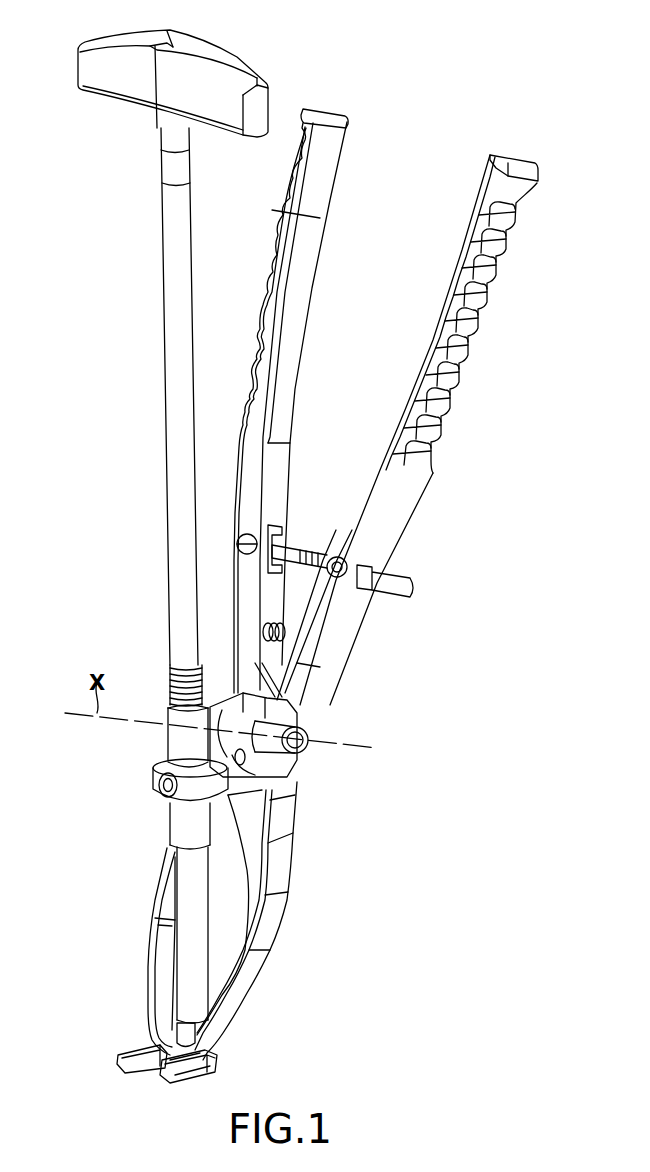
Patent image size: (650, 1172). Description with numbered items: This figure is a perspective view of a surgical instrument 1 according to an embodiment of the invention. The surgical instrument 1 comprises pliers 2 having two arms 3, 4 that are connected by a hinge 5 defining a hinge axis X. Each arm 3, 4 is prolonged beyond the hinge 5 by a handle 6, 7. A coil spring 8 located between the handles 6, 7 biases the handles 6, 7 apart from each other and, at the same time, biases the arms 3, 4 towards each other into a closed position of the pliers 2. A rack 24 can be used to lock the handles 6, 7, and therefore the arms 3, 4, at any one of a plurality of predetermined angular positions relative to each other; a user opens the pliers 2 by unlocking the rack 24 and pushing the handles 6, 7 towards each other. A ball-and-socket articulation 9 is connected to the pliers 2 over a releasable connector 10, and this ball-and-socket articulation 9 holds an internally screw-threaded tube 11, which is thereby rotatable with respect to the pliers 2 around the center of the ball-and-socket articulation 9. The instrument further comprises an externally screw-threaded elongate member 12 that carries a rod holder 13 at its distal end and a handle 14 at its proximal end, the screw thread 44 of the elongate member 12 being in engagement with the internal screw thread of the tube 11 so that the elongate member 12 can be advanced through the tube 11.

The surgical instrument 1 is at (480, 64).
The pliers 2 is at (317, 810).
The arm 3 is at (265, 920).
The arm 4 is at (158, 890).
The hinge 5 is at (292, 766).
The handle 6 is at (300, 292).
The handle 7 is at (478, 310).
The coil spring 8 is at (283, 627).
The ball-and-socket articulation 9 is at (158, 790).
The releasable connector 10 is at (270, 820).
The internally screw-threaded tube 11 is at (175, 735).
The externally screw-threaded elongate member 12 is at (172, 427).
The rod holder 13 is at (210, 1068).
The handle 14 is at (90, 72).
The rack 24 is at (312, 550).
The screw thread 44 is at (170, 673).